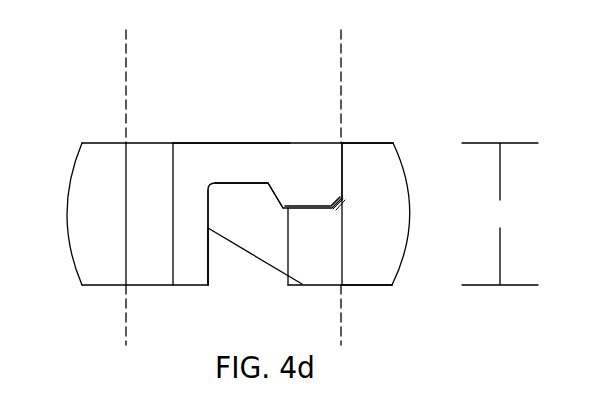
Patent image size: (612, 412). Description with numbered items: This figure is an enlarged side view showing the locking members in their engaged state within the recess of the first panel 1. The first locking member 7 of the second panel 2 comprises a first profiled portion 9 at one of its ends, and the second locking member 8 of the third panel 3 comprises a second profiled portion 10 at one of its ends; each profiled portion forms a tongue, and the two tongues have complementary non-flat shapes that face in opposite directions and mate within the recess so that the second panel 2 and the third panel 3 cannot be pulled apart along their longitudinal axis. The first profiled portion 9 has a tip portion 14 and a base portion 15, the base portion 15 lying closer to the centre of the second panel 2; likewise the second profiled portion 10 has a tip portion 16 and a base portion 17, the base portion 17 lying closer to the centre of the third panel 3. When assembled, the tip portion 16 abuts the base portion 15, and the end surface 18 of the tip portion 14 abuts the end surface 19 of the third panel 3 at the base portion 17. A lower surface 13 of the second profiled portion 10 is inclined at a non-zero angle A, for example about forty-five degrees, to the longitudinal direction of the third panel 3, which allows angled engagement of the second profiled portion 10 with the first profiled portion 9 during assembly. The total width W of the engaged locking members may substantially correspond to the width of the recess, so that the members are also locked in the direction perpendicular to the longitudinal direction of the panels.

The first panel 1 is at (341, 52).
The second panel 2 is at (88, 155).
The third panel 3 is at (375, 143).
The first locking member 7 is at (190, 121).
The second locking member 8 is at (235, 299).
The first profiled portion 9 is at (236, 143).
The second profiled portion 10 is at (333, 240).
The lower surface 13 is at (272, 266).
The tip portion 14 is at (297, 207).
The base portion 15 is at (230, 184).
The tip portion 16 is at (240, 184).
The base portion 17 is at (315, 208).
The end surface 18 is at (340, 167).
The end surface 19 is at (343, 167).
The angle A is at (283, 251).
The total width W is at (500, 214).